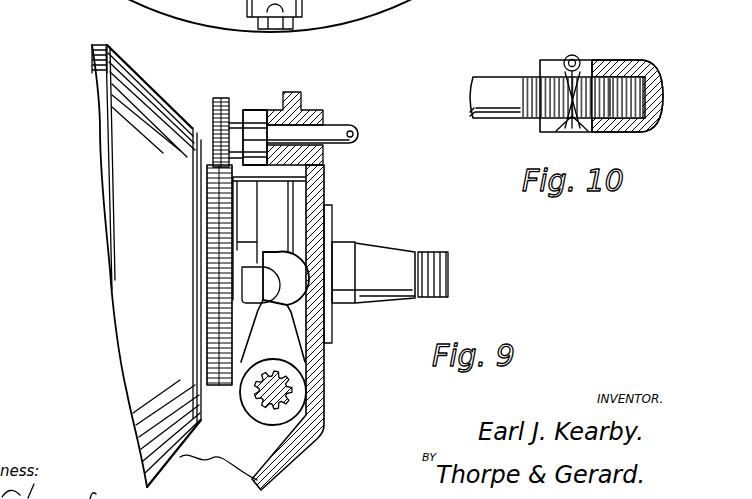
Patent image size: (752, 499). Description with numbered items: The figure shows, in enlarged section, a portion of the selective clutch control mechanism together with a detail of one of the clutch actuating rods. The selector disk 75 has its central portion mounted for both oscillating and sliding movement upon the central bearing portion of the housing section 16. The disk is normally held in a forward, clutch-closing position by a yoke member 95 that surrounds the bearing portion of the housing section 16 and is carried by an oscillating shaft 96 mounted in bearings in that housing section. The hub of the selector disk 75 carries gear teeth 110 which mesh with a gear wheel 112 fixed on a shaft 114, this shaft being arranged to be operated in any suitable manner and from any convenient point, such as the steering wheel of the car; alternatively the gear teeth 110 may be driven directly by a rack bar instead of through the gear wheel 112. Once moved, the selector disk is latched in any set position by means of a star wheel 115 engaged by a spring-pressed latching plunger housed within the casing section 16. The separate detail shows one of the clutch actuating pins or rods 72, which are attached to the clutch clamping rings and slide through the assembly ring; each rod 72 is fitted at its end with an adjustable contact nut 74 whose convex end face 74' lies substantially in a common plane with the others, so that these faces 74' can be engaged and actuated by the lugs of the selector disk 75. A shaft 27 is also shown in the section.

In FIG. 9, the selector disk 75 is at (122, 162).
In FIG. 9, the gear wheel 112 is at (213, 98).
In FIG. 9, the star wheel 115 is at (253, 110).
In FIG. 9, the shaft 114 is at (333, 133).
In FIG. 9, the yoke member 95 is at (257, 180).
In FIG. 9, the housing section 16 is at (324, 430).
In FIG. 9, the oscillating shaft 96 is at (292, 392).
In FIG. 9, the gear teeth 110 is at (231, 387).
In FIG. 9, the shaft 27 is at (380, 258).
In FIG. 10, the clutch actuating pin or rod 72 is at (493, 92).
In FIG. 10, the contact nut 74 is at (601, 66).
In FIG. 10, the convex end face 74' is at (667, 59).